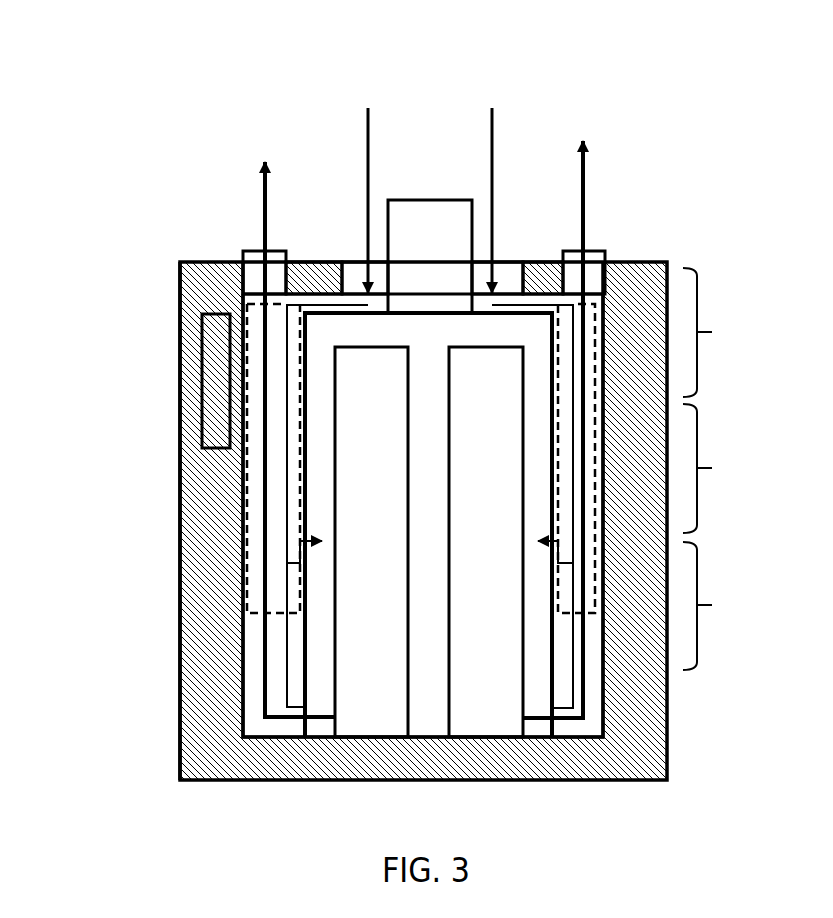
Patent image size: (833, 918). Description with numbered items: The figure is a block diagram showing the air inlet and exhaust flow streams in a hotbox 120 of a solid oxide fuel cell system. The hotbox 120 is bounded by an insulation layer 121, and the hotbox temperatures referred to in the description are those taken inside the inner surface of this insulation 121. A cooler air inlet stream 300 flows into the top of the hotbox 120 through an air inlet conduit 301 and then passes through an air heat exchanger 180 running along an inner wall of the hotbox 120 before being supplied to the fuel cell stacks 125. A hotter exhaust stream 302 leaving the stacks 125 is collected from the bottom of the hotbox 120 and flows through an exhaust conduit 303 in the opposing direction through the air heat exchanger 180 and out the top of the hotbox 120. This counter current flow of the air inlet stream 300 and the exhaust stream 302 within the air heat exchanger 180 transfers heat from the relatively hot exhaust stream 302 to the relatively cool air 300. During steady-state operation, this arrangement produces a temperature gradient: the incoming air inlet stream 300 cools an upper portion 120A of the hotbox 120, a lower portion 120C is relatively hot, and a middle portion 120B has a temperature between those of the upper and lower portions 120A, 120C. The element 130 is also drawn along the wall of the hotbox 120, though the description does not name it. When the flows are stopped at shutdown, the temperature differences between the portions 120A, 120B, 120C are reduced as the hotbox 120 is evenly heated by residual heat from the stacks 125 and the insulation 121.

The hotbox 120 is at (178, 522).
The upper portion 120A is at (732, 332).
The middle portion 120B is at (732, 468).
The lower portion 120C is at (732, 606).
The insulation layer 121 is at (212, 623).
The stacks 125 is at (392, 555).
The heater 130 is at (200, 382).
The air heat exchanger 180 is at (243, 480).
The air inlet stream 300 is at (365, 128).
The air inlet conduit 301 is at (299, 298).
The exhaust stream 302 is at (262, 198).
The exhaust conduit 303 is at (253, 677).